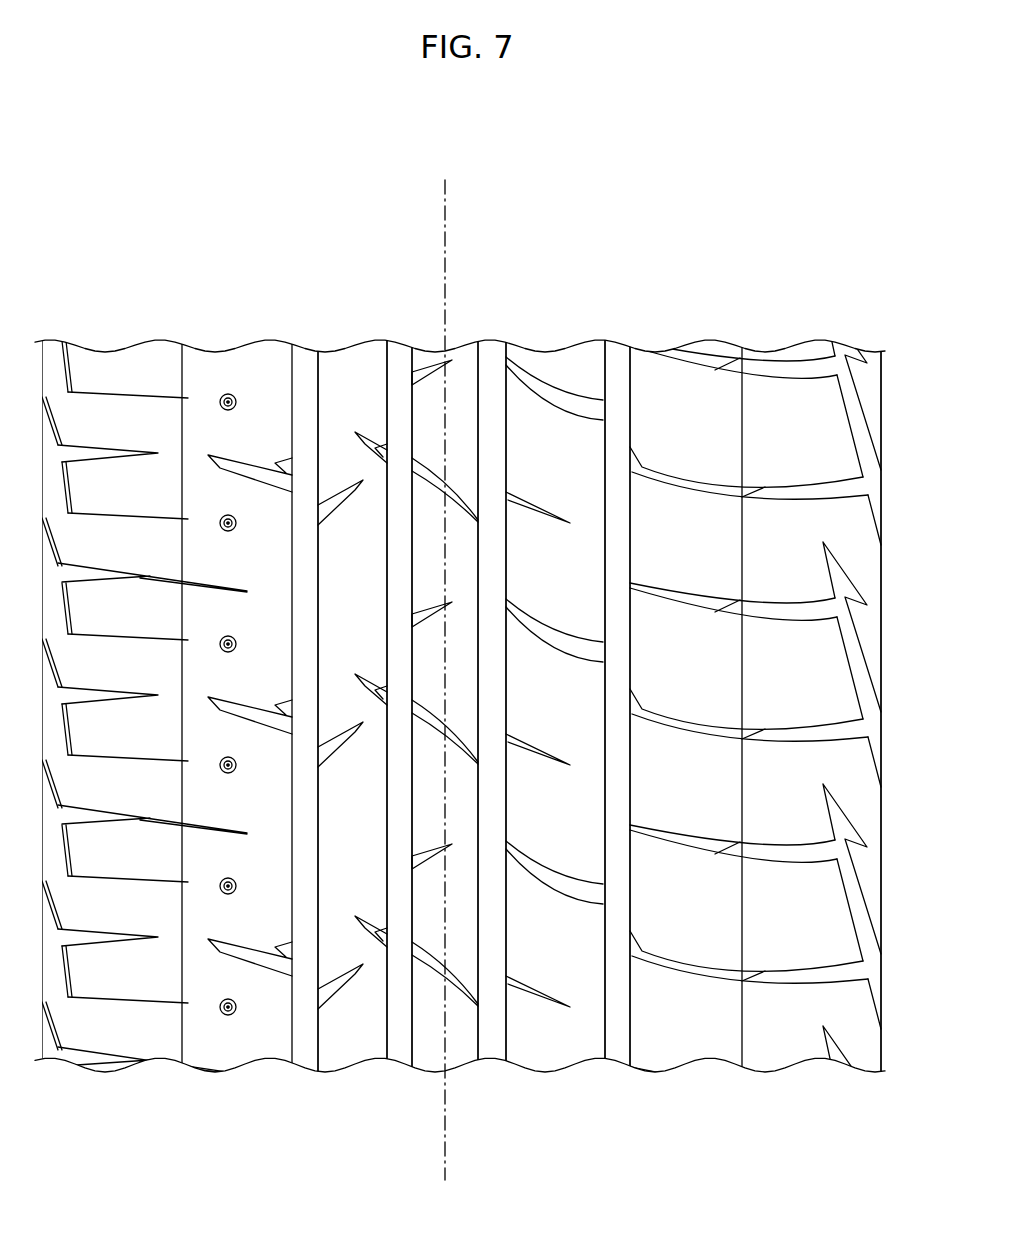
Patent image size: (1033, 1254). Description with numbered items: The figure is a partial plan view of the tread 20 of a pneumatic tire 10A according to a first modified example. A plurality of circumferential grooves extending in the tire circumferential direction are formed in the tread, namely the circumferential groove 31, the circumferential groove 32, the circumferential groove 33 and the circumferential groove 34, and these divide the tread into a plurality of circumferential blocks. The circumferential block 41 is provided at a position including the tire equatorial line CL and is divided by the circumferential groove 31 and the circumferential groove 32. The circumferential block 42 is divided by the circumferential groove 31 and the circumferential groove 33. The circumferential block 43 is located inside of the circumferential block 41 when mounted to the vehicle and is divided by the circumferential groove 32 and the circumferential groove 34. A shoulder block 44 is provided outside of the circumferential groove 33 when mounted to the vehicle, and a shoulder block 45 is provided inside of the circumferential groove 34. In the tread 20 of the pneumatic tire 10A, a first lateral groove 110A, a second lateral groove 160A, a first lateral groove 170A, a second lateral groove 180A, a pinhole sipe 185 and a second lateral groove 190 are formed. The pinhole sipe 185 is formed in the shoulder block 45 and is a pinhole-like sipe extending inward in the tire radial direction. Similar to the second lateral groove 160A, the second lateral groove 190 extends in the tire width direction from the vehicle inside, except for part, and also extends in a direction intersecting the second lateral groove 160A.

The pneumatic tire 10A is at (775, 242).
The tread 20 is at (777, 346).
The tire equatorial line CL is at (447, 232).
The shoulder block 45 is at (198, 363).
The circumferential groove 34 is at (303, 363).
The circumferential block 43 is at (345, 363).
The circumferential groove 32 is at (398, 363).
The circumferential block 41 is at (457, 363).
The circumferential groove 31 is at (495, 363).
The circumferential block 42 is at (548, 365).
The circumferential groove 33 is at (615, 363).
The shoulder block 44 is at (688, 395).
The second lateral groove 180A is at (202, 583).
The second lateral groove 190 is at (332, 747).
The pinhole sipe 185 is at (230, 775).
The first lateral groove 110A is at (574, 418).
The second lateral groove 160A is at (435, 728).
The first lateral groove 170A is at (697, 603).